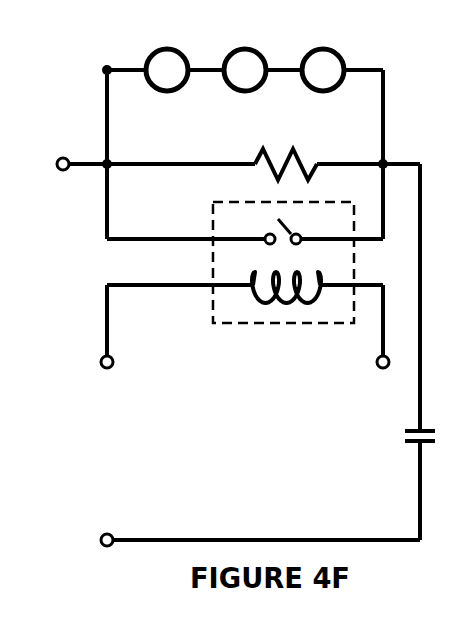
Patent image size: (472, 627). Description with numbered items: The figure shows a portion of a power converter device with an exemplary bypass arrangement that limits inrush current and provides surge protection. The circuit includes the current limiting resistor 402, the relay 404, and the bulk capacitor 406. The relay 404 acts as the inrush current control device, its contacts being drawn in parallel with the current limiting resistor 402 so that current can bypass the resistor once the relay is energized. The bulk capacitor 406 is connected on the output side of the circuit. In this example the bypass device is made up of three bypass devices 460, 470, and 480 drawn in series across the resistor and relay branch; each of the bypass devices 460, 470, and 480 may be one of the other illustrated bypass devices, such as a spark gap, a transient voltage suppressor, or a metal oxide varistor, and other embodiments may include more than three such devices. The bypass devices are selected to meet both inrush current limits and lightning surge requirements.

The current limiting resistor R1 402 is at (278, 161).
The relay K1 404 is at (285, 277).
The bulk capacitor C5 406 is at (409, 438).
The bypass device 460 is at (167, 73).
The bypass device 470 is at (245, 73).
The bypass device 480 is at (323, 73).